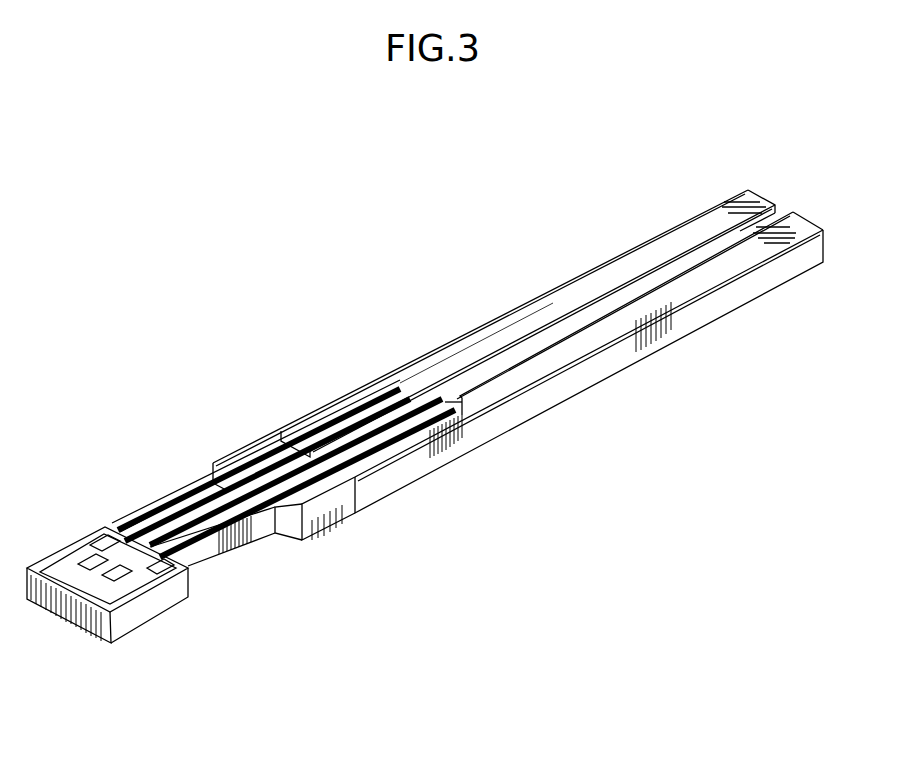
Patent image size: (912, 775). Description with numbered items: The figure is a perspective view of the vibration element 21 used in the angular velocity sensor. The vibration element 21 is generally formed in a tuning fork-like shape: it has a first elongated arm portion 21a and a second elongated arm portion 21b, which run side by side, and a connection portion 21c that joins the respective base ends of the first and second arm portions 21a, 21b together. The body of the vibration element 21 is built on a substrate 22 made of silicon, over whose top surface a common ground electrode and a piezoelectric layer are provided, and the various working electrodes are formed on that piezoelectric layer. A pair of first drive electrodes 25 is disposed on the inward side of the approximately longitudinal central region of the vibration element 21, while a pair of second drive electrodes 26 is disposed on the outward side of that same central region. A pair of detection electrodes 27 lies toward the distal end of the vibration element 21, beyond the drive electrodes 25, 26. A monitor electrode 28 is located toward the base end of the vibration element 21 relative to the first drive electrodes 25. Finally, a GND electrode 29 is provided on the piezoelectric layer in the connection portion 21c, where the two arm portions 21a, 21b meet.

The vibration element 21 is at (497, 422).
The first elongated arm portion 21a is at (712, 215).
The second elongated arm portion 21b is at (793, 225).
The connection portion 21c is at (150, 578).
The substrate 22 is at (88, 623).
The first drive electrodes 25 is at (422, 417).
The second drive electrodes 26 is at (377, 407).
The detection electrodes 27 is at (553, 303).
The monitor electrode 28 is at (323, 422).
The GND electrode 29 is at (118, 577).